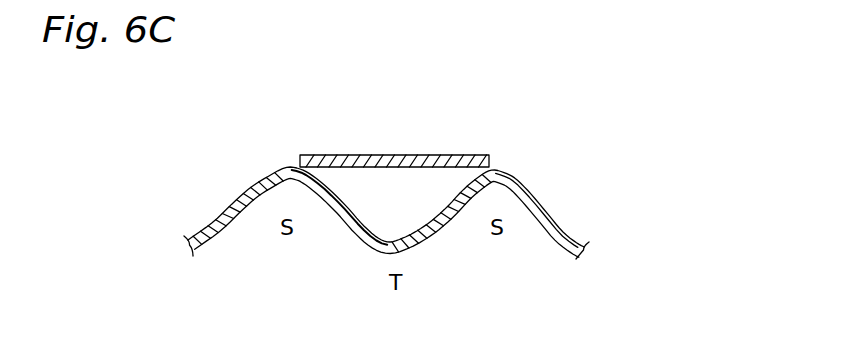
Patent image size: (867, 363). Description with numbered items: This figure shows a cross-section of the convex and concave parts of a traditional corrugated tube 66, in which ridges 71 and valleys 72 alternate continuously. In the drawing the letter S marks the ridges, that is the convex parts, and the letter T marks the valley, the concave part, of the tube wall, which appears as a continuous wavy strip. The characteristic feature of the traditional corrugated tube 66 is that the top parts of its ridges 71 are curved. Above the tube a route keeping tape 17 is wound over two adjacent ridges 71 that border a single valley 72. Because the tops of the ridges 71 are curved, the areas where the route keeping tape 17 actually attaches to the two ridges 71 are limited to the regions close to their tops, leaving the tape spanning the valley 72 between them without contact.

The route keeping tape 17 is at (404, 155).
The traditional corrugated tube 66 is at (555, 212).
The ridges 71 is at (282, 168).
The valley 72 is at (383, 252).